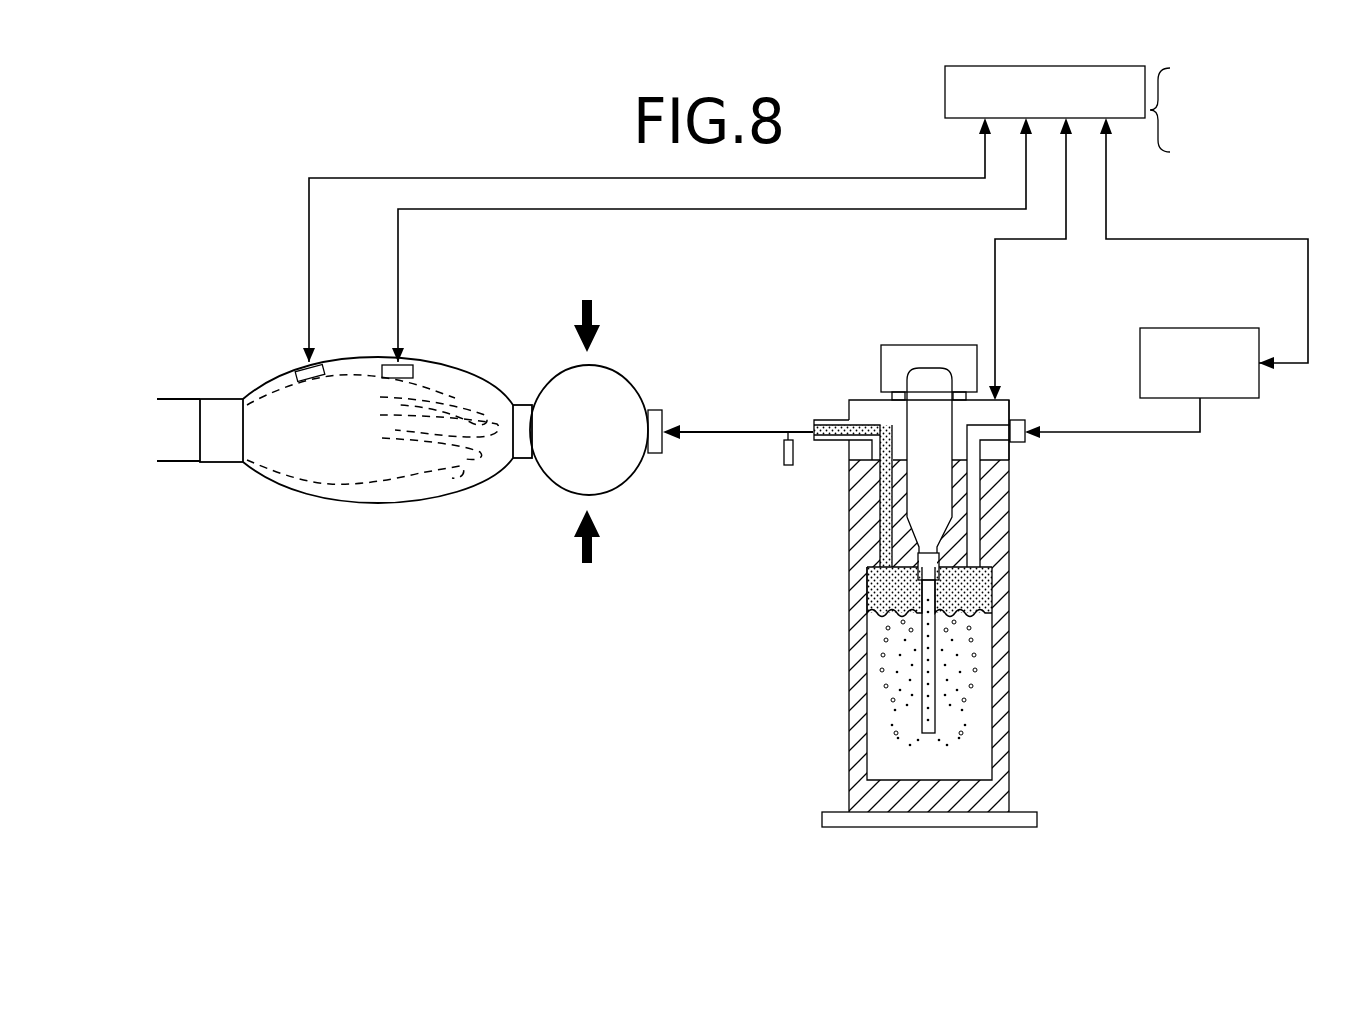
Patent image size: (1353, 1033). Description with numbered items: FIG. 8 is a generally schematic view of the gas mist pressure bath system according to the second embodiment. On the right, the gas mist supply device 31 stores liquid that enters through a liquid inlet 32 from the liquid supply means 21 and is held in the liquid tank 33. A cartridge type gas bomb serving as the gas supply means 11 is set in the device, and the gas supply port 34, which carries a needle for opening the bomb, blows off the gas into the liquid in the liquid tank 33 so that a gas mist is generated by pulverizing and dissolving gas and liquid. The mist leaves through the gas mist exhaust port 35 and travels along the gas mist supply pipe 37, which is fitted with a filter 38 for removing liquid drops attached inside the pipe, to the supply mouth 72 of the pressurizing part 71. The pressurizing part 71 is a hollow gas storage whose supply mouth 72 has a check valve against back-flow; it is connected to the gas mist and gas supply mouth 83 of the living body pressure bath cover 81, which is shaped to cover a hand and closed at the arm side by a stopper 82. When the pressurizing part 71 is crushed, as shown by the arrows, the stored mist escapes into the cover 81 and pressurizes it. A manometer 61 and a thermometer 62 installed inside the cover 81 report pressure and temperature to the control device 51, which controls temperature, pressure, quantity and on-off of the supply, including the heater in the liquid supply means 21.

The gas supply means 11 is at (942, 513).
The liquid supply means 21 is at (1215, 328).
The gas mist supply device 31 is at (1030, 360).
The liquid inlet 32 is at (1018, 420).
The liquid tank 33 is at (992, 722).
The gas supply port 34 is at (943, 570).
The gas mist exhaust port 35 is at (828, 445).
The gas mist supply pipe 37 is at (730, 430).
The filter 38 is at (788, 467).
The control device 51 is at (945, 80).
The manometer 61 is at (412, 362).
The thermometer 62 is at (315, 365).
The pressurizing part 71 is at (620, 368).
The supply mouth 72 is at (656, 455).
The living body pressure bath cover 81 is at (478, 355).
The stopper 82 is at (222, 398).
The gas mist and gas supply mouth 83 is at (522, 460).